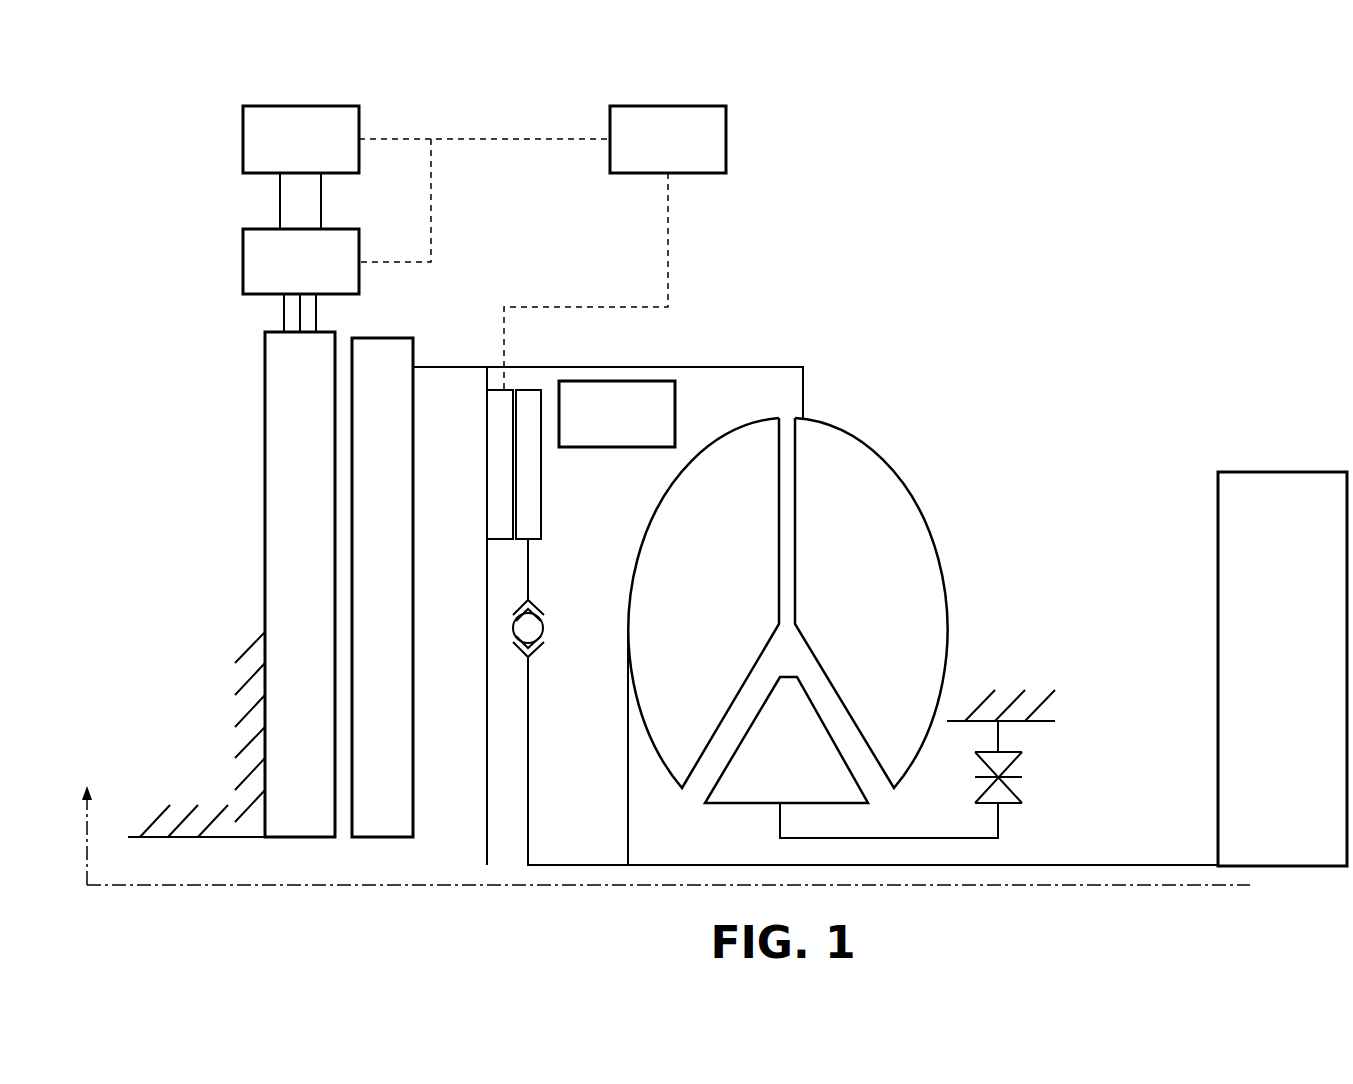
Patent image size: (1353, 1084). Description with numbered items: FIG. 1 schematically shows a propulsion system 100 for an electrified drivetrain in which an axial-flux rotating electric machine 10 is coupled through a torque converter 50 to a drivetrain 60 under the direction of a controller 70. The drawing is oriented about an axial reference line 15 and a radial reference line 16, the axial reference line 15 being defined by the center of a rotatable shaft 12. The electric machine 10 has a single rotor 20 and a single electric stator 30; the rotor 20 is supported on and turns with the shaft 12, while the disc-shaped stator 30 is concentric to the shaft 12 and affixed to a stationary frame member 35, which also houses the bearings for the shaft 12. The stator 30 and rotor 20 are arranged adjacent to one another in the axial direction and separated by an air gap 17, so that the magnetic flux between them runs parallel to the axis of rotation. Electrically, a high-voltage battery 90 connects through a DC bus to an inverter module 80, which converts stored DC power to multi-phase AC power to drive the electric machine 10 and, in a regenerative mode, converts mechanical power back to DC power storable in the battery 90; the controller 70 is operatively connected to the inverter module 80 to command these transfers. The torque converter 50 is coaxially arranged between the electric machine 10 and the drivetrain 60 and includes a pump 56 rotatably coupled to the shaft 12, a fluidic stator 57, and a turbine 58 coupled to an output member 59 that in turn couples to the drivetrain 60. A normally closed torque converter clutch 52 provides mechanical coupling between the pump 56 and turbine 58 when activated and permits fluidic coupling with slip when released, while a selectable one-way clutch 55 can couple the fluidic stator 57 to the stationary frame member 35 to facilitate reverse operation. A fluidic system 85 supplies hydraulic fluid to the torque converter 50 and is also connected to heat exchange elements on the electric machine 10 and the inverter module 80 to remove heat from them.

The propulsion system 100 is at (899, 114).
The axial-flux rotating electric machine 10 is at (252, 417).
The shaft 12 is at (748, 367).
The axial reference line 15 is at (1133, 888).
The radial reference line 16 is at (85, 848).
The air gap 17 is at (343, 846).
The rotor 20 is at (402, 838).
The electric stator 30 is at (297, 838).
The stationary frame member 35 is at (186, 820).
The torque converter 50 is at (807, 640).
The torque converter clutch 52 is at (542, 517).
The selectable one-way clutch 55 is at (1023, 775).
The pump 56 is at (853, 563).
The fluidic stator 57 is at (774, 767).
The turbine 58 is at (694, 563).
The output member 59 is at (1063, 866).
The drivetrain 60 is at (1270, 681).
The controller 70 is at (655, 152).
The inverter module 80 is at (288, 274).
The fluidic system 85 is at (604, 426).
The battery 90 is at (288, 152).